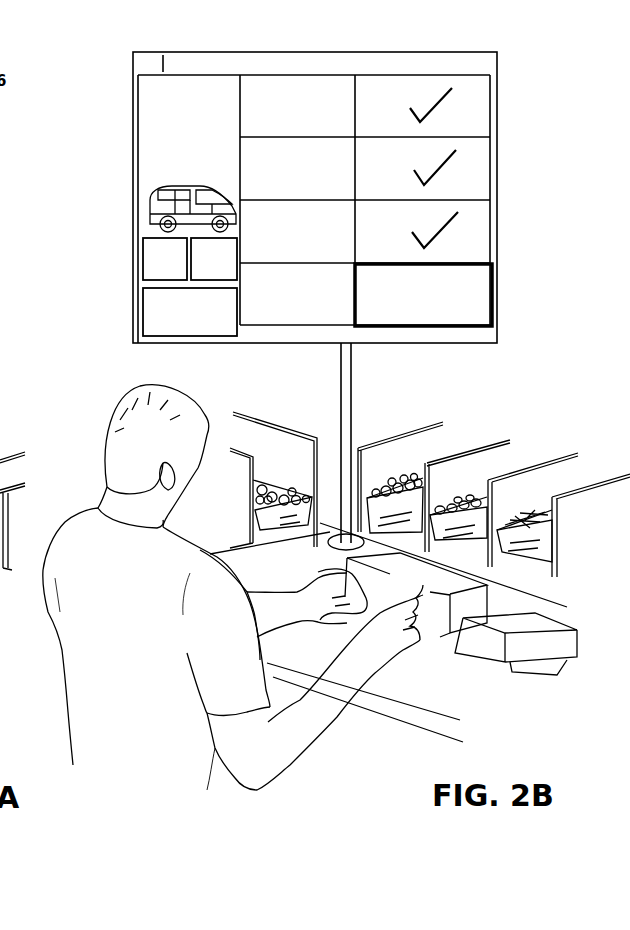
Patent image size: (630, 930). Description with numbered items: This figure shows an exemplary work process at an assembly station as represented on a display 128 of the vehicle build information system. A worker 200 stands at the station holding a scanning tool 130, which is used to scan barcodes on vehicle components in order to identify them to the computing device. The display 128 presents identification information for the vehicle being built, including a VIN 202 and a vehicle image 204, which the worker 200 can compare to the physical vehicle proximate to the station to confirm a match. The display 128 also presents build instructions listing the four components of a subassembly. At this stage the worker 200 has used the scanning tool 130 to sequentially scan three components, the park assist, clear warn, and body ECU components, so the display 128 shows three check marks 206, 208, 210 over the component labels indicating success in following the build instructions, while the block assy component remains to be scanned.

The display 128 is at (133, 158).
The VIN 202 is at (176, 80).
The vehicle image 204 is at (146, 207).
The check mark 206 is at (445, 105).
The check mark 208 is at (450, 165).
The check mark 210 is at (452, 220).
The scanning tool 130 is at (417, 592).
The worker 200 is at (130, 722).